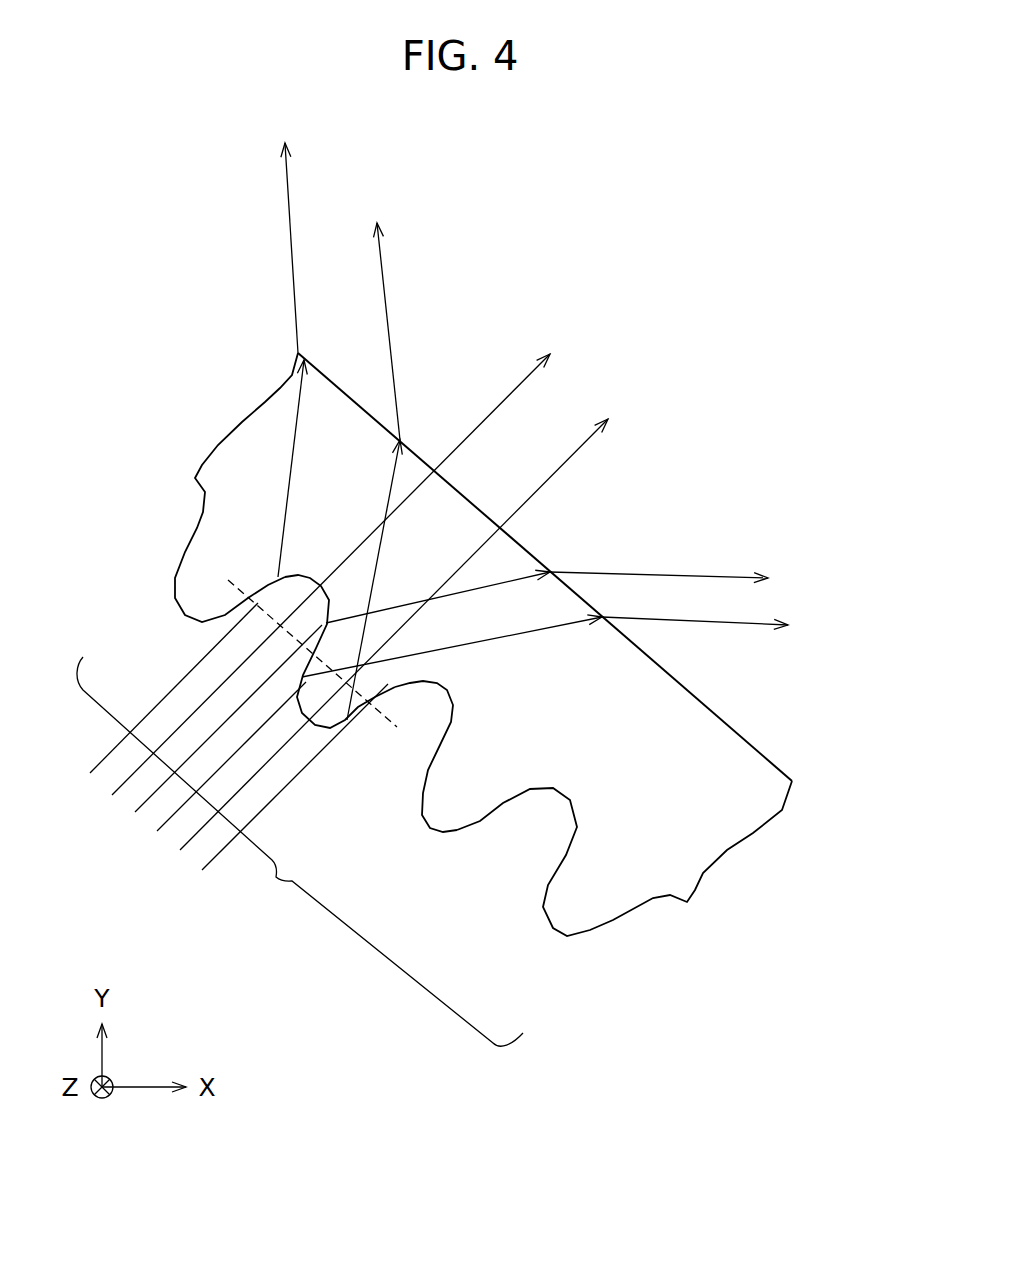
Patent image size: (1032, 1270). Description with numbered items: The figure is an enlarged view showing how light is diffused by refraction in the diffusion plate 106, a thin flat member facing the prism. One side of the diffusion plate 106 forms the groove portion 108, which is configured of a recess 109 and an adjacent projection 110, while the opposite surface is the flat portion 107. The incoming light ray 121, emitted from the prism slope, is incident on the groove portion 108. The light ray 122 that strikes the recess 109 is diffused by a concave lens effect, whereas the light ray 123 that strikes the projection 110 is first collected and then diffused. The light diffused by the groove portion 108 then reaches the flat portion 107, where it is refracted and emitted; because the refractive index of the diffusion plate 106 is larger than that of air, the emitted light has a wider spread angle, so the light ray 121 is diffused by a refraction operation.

The diffusion plate 106 is at (736, 870).
The flat portion 107 is at (766, 752).
The groove portion 108 is at (300, 851).
The recess 109 is at (437, 690).
The projection 110 is at (435, 833).
The light ray 121 is at (70, 771).
The light ray 122 is at (291, 236).
The light ray 123 is at (391, 345).